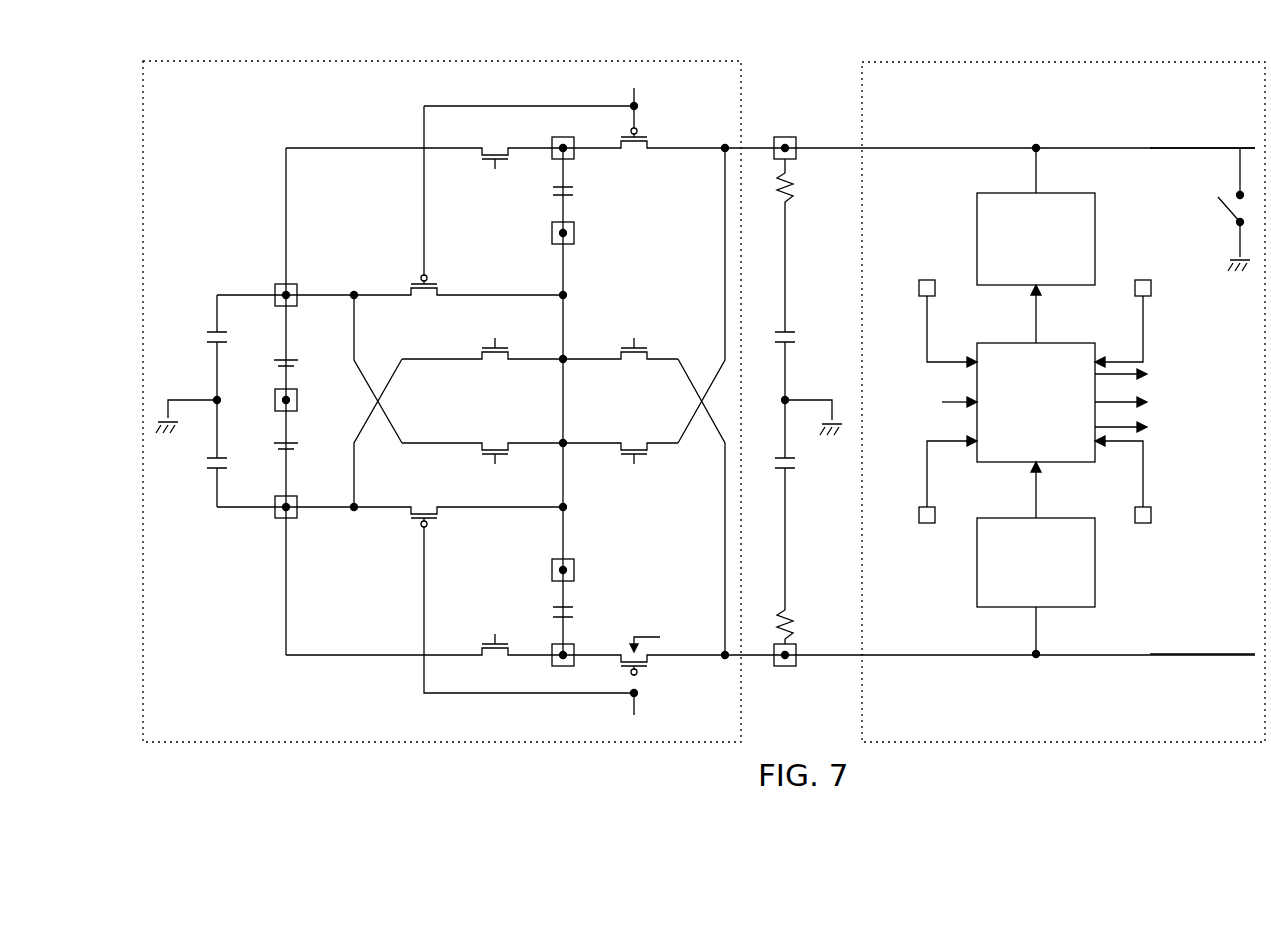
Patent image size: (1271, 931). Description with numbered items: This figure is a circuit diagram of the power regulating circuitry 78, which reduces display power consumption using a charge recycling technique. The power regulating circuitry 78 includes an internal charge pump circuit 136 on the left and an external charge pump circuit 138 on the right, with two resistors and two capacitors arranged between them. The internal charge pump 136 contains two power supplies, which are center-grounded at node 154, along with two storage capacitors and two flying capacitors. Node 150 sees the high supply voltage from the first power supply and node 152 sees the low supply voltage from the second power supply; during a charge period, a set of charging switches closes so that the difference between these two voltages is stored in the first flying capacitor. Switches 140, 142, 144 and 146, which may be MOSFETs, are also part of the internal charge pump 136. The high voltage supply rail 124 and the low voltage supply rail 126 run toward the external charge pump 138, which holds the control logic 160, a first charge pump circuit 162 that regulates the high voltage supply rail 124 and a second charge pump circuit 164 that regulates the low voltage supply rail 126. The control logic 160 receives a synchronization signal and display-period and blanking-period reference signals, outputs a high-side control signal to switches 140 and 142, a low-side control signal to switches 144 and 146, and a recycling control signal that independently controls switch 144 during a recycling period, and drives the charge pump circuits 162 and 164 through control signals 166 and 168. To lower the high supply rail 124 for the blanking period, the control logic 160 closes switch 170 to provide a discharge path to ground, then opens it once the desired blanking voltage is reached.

The power regulating circuitry 78 is at (754, 43).
The internal charge pump circuit 136 is at (463, 61).
The external charge pump circuit 138 is at (1040, 61).
The switch 140 is at (646, 137).
The switch 142 is at (436, 281).
The switch 144 is at (646, 671).
The switch 146 is at (436, 522).
The node 150 is at (295, 284).
The node 152 is at (294, 519).
The node 154 is at (296, 399).
The control logic 160 is at (1065, 343).
The first charge pump circuit 162 is at (1063, 193).
The second charge pump circuit 164 is at (1063, 610).
The control signal 166 is at (1034, 323).
The control signal 168 is at (1034, 500).
The switch 170 is at (1220, 204).
The VCPH 124 is at (1183, 148).
The VCPL 126 is at (1168, 654).